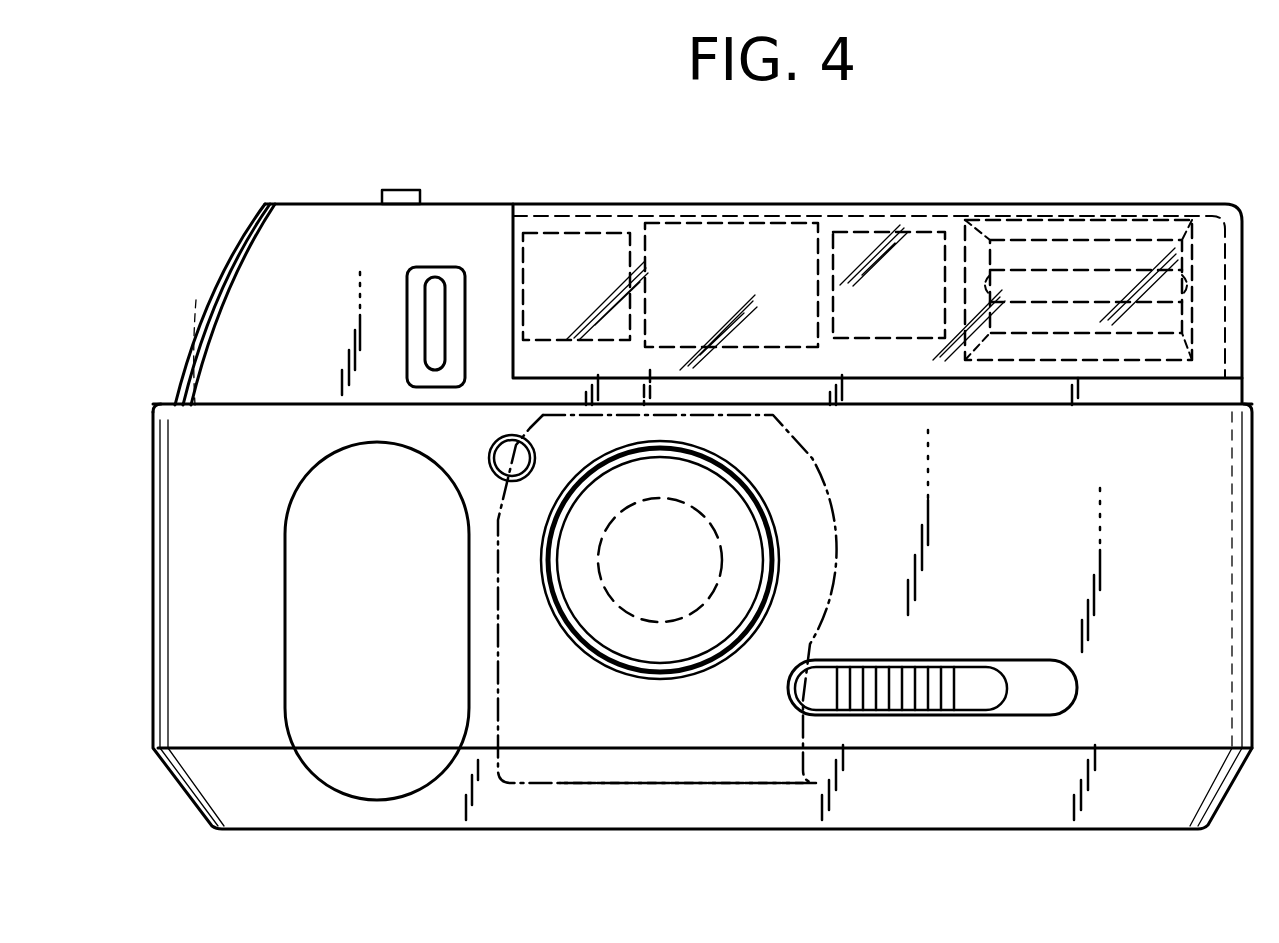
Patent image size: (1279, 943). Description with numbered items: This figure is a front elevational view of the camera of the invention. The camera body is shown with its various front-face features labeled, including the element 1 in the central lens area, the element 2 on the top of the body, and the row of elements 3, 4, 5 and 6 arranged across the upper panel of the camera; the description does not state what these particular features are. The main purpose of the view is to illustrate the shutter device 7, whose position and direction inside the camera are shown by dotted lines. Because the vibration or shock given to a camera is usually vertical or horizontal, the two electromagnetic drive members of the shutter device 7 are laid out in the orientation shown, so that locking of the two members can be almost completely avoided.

The photographing lens unit 1 is at (705, 516).
The release button 2 is at (402, 190).
The display window 3 is at (580, 232).
The display window 4 is at (732, 222).
The display window 5 is at (870, 232).
The display window 6 is at (1035, 272).
The shutter device 7 is at (677, 785).